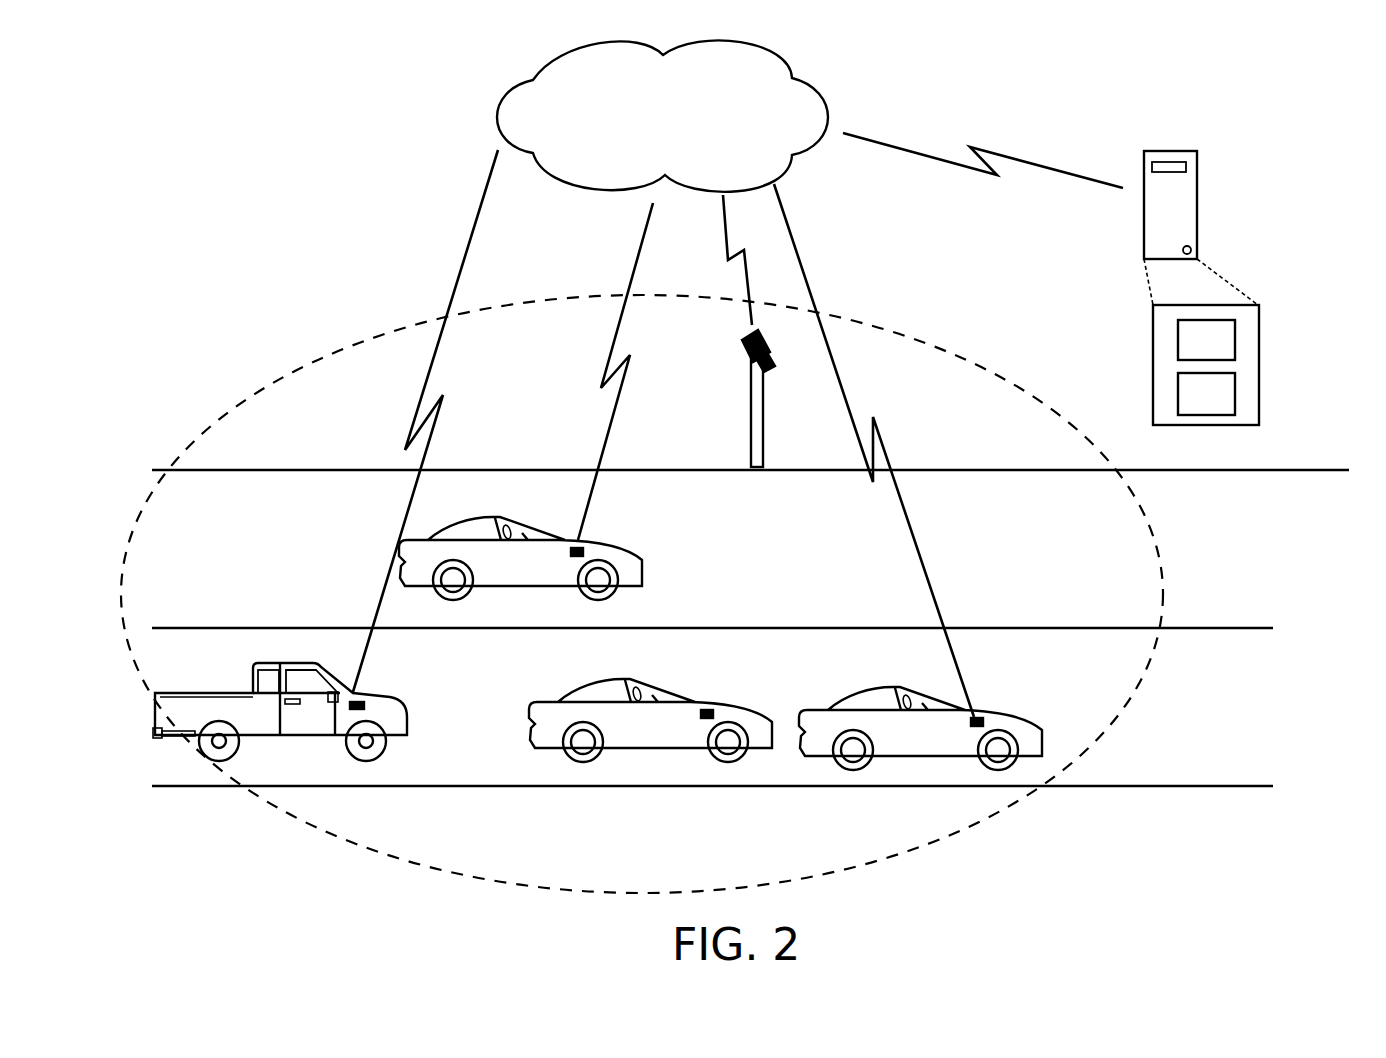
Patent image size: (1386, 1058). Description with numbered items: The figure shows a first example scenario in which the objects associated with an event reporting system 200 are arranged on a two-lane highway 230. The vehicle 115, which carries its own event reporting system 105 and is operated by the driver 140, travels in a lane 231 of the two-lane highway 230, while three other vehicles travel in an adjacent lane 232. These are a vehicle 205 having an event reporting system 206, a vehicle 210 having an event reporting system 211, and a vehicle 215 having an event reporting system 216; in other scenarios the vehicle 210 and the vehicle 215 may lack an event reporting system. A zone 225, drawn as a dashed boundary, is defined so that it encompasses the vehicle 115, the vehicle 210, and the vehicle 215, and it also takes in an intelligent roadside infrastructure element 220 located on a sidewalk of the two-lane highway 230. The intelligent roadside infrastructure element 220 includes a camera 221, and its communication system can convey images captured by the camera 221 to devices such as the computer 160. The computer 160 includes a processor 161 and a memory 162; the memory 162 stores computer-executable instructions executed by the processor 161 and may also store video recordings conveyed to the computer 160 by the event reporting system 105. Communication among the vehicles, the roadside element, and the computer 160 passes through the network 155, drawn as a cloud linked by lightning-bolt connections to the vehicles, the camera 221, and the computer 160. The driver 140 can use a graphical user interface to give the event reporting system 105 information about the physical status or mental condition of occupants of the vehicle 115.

The event reporting system 200 is at (735, 492).
The event reporting system 105 is at (571, 553).
The vehicle 115 is at (549, 540).
The driver 140 is at (515, 527).
The network 155 is at (742, 81).
The computer 160 is at (1214, 288).
The processor 161 is at (1206, 340).
The memory 162 is at (1206, 394).
The vehicle 205 is at (320, 710).
The event reporting system 206 is at (350, 706).
The vehicle 210 is at (650, 703).
The event reporting system 211 is at (701, 714).
The vehicle 215 is at (958, 722).
The event reporting system 216 is at (971, 722).
The intelligent roadside infrastructure element 220 is at (728, 414).
The camera 221 is at (750, 349).
The zone 225 is at (935, 346).
The two-lane highway 230 is at (1277, 448).
The lane 231 is at (1240, 554).
The lane 232 is at (1240, 700).